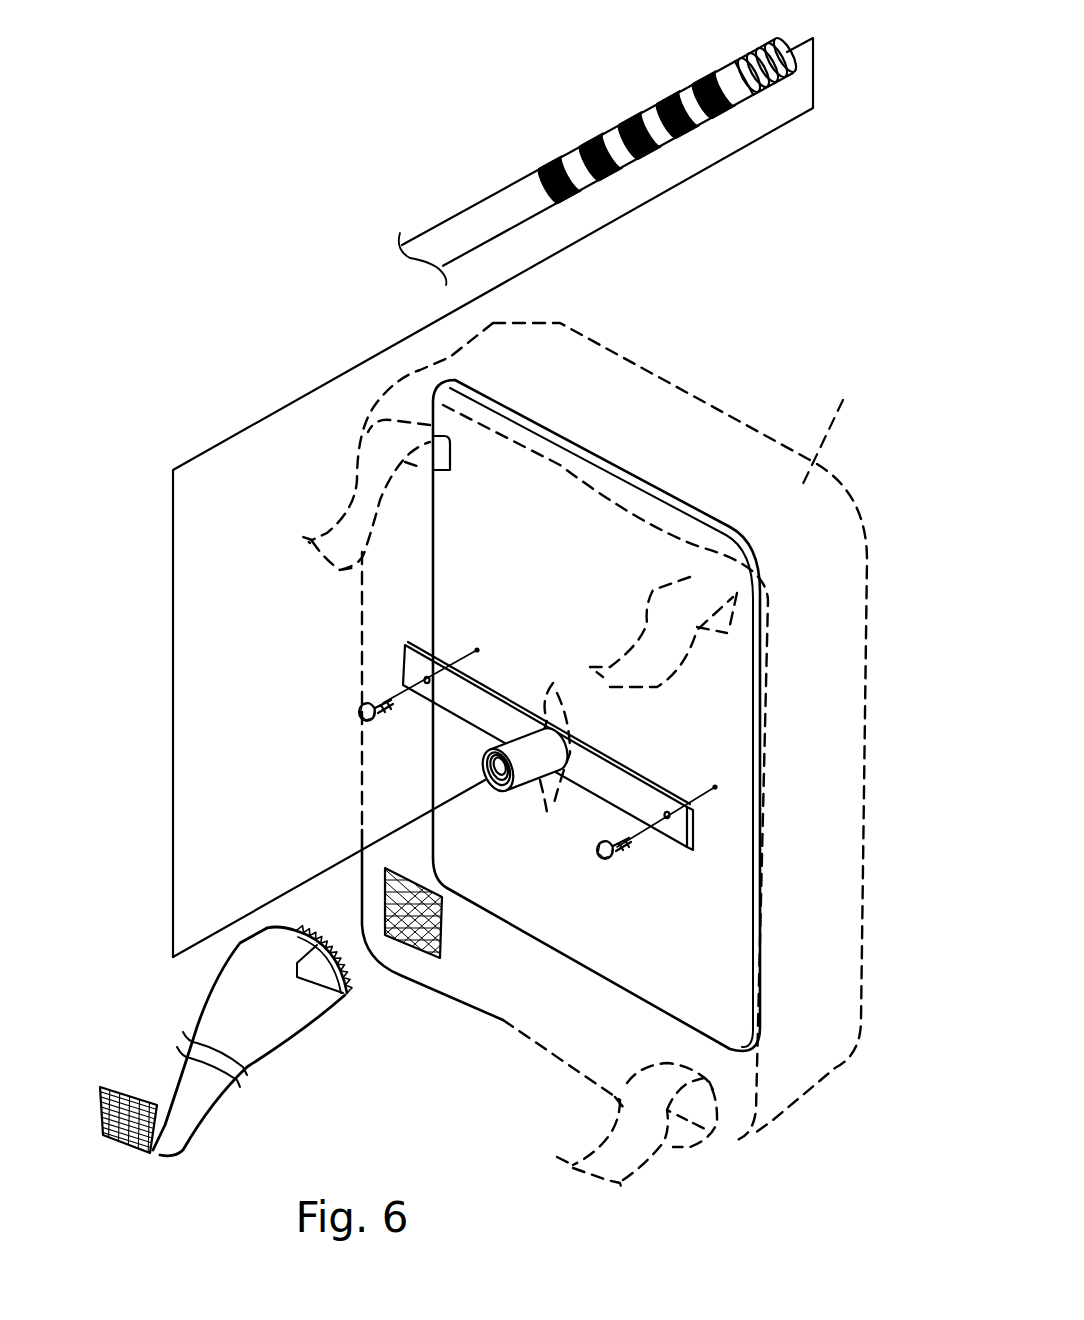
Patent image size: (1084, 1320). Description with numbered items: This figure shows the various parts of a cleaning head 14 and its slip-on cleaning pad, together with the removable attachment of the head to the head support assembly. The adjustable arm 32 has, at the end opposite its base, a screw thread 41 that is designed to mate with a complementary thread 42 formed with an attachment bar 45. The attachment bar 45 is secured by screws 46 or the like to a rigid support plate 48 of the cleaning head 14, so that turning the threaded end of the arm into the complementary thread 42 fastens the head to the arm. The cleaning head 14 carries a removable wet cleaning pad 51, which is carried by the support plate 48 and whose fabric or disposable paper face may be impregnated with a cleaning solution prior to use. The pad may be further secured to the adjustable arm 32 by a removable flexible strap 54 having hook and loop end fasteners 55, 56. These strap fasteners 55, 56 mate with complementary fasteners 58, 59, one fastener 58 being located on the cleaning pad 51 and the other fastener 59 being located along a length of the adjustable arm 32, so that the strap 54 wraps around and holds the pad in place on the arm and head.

The cleaning head 14 is at (742, 410).
The adjustable arm 32 is at (470, 222).
The screw thread 41 is at (757, 53).
The complementary fastener 59 is at (622, 123).
The wet cleaning pad 51 is at (827, 428).
The rigid support plate 48 is at (510, 545).
The attachment bar 45 is at (493, 717).
The complementary thread 42 is at (503, 793).
The screws 46 is at (607, 860).
The complementary fastener 58 is at (443, 938).
The removable flexible strap 54 is at (240, 1017).
The hook and loop end fastener 55 is at (353, 980).
The hook and loop end fastener 56 is at (97, 1103).